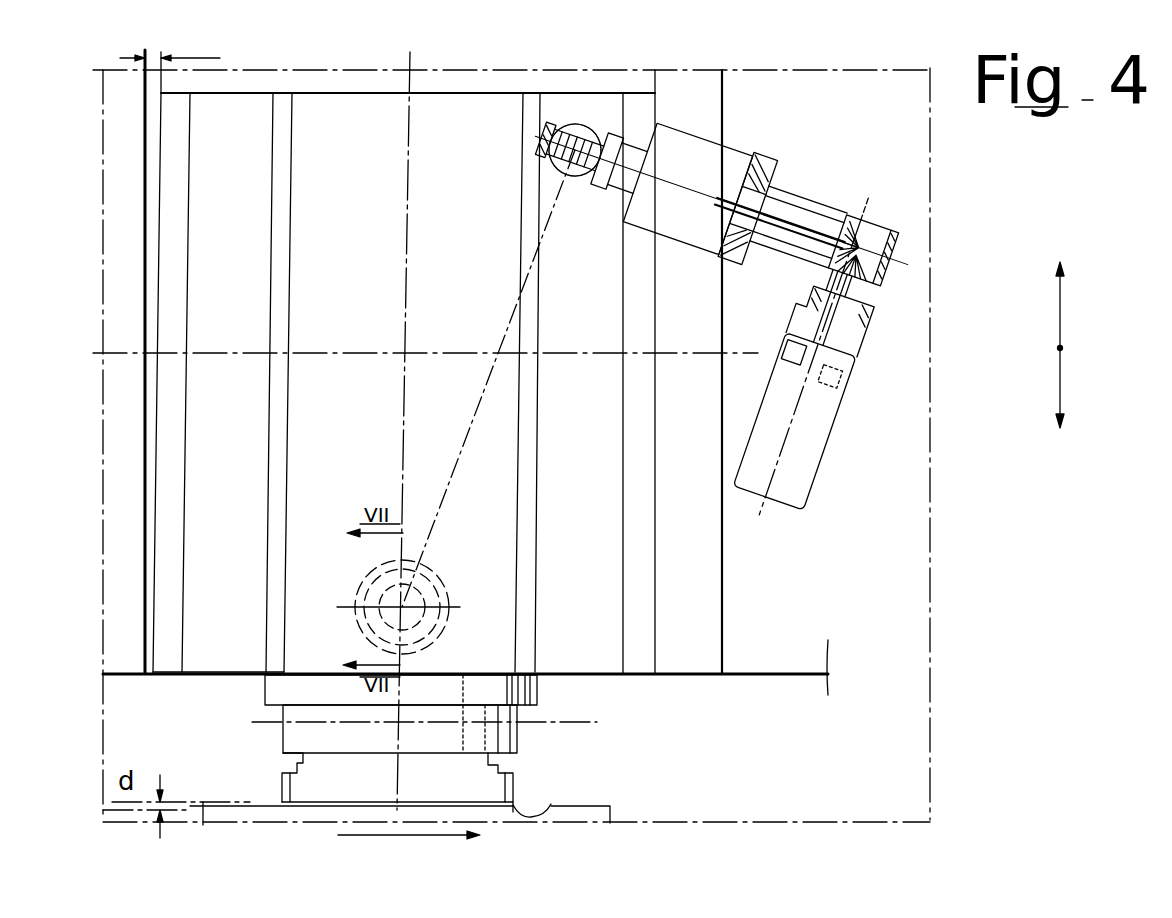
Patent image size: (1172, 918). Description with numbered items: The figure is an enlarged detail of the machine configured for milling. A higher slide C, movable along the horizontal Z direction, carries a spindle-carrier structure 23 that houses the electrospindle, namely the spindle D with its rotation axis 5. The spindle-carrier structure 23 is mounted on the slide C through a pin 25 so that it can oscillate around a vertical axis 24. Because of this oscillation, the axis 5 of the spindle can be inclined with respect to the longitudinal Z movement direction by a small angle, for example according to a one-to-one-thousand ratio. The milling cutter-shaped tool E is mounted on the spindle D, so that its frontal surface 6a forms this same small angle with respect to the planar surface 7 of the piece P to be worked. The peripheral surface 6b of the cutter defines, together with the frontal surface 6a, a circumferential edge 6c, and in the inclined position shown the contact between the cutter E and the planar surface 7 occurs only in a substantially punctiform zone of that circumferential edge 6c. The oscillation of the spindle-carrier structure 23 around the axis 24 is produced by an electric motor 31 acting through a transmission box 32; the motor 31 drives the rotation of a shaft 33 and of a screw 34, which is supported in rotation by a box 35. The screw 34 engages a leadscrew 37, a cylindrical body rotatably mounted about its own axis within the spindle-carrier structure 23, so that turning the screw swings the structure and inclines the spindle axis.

The rotation axis 5 is at (412, 176).
The spindle-carrier structure 23 is at (490, 110).
The vertical axis 24 is at (460, 553).
The pin 25 is at (390, 630).
The electric motor 31 is at (813, 368).
The transmission box 32 is at (780, 220).
The shaft 33 is at (867, 239).
The screw 34 is at (548, 138).
The box 35 is at (700, 192).
The leadscrew 37 is at (590, 155).
The frontal surface 6a is at (297, 806).
The peripheral surface 6b is at (282, 787).
The circumferential edge 6c is at (553, 803).
The planar surface 7 is at (592, 793).
The higher slide C is at (712, 637).
The spindle D is at (273, 685).
The milling cutter-shaped tool E is at (477, 782).
The piece P is at (613, 808).
The Z direction Z is at (1078, 345).